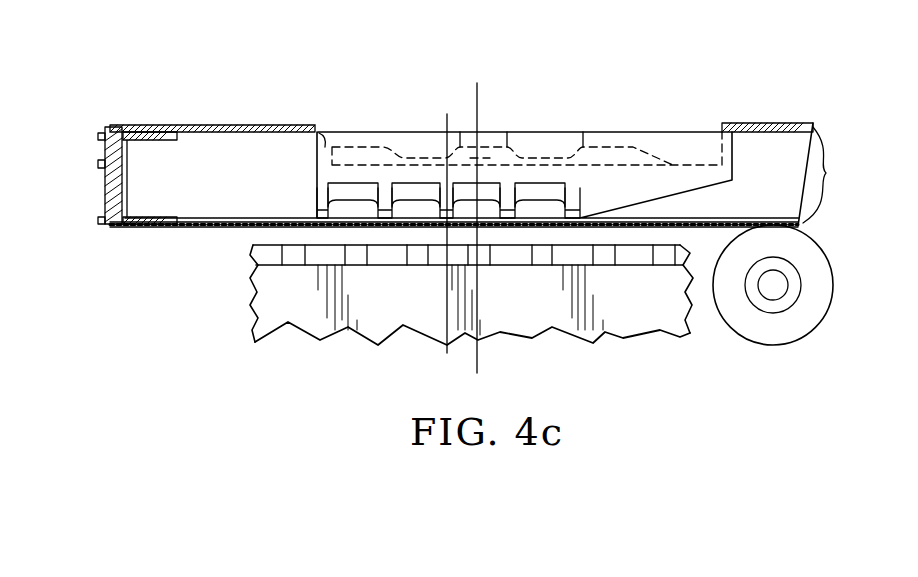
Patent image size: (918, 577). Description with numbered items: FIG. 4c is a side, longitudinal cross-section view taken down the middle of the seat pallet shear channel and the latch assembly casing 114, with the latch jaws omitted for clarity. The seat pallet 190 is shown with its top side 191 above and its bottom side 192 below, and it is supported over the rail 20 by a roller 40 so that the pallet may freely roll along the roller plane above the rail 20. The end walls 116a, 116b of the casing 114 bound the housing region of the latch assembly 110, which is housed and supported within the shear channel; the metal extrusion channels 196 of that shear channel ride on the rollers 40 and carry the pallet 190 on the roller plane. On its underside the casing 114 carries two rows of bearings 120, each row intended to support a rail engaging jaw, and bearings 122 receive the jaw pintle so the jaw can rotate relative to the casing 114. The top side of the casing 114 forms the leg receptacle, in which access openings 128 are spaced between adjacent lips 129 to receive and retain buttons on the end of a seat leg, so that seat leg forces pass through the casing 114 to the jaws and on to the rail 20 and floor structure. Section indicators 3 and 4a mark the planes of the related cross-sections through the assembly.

The seat pallet latch assembly 110 is at (694, 119).
The latch assembly casing 114 is at (485, 157).
The housing wall 116a is at (770, 123).
The housing wall 116b is at (243, 123).
The bearings 120 is at (587, 187).
The bearings 122 is at (318, 200).
The access openings 128 is at (408, 143).
The lips 129 is at (608, 142).
The seat pallet 190 is at (115, 115).
The top side 191 is at (180, 125).
The bottom side 192 is at (133, 228).
The metal extrusion channels 196 is at (797, 166).
The rail 20 is at (246, 297).
The roller 40 is at (801, 325).
The section line 3 is at (447, 114).
The section line 4a is at (477, 83).